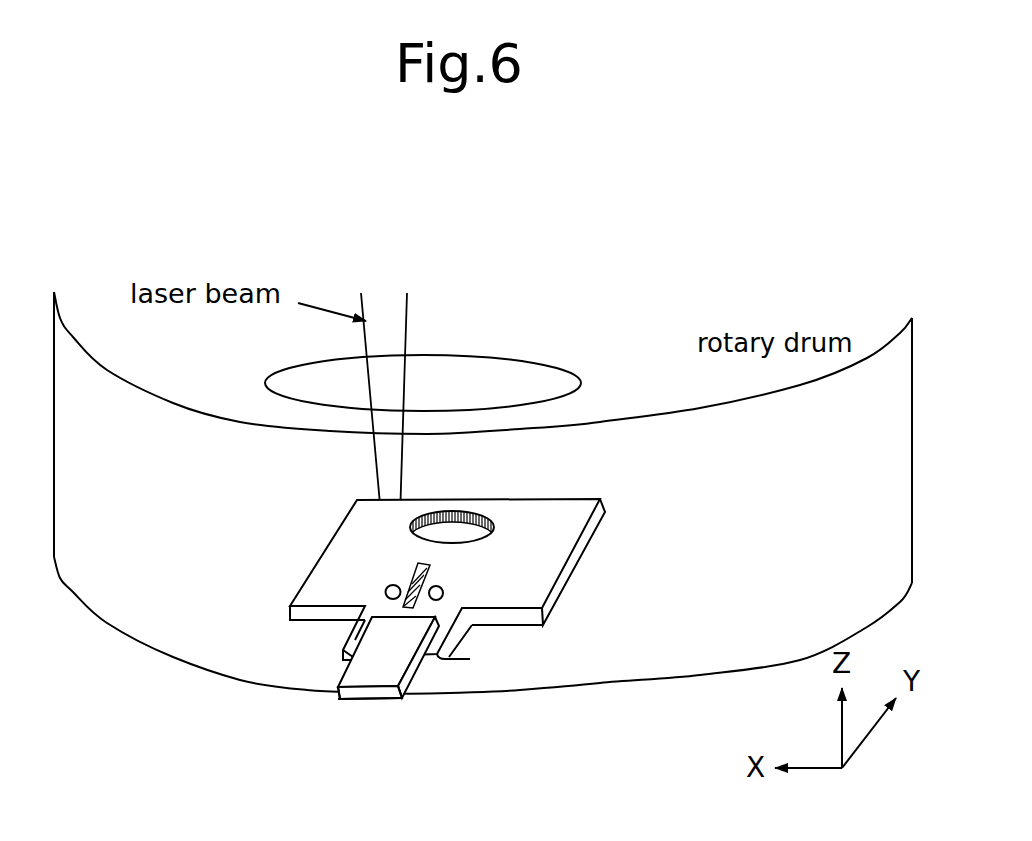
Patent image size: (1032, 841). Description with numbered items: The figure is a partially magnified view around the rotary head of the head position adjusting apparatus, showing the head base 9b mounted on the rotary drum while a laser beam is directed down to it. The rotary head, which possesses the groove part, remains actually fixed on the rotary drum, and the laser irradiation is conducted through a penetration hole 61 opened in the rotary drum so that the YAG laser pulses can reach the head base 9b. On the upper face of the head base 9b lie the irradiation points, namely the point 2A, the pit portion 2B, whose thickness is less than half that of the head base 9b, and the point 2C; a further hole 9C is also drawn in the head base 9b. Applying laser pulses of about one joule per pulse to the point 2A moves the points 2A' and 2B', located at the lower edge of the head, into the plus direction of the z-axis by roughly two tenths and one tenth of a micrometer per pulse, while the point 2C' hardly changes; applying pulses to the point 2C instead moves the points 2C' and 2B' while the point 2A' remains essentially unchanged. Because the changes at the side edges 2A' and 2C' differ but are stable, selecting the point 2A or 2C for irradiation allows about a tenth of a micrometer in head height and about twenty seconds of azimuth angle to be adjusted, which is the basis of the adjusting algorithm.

The penetration hole 61 is at (478, 354).
The head base 9b is at (352, 500).
The hole in platform 9C is at (483, 524).
The point 2A is at (327, 556).
The pit portion 2B is at (441, 527).
The point 2C is at (545, 565).
The point 2A' is at (290, 733).
The point 2B' is at (370, 750).
The point 2C' is at (441, 734).